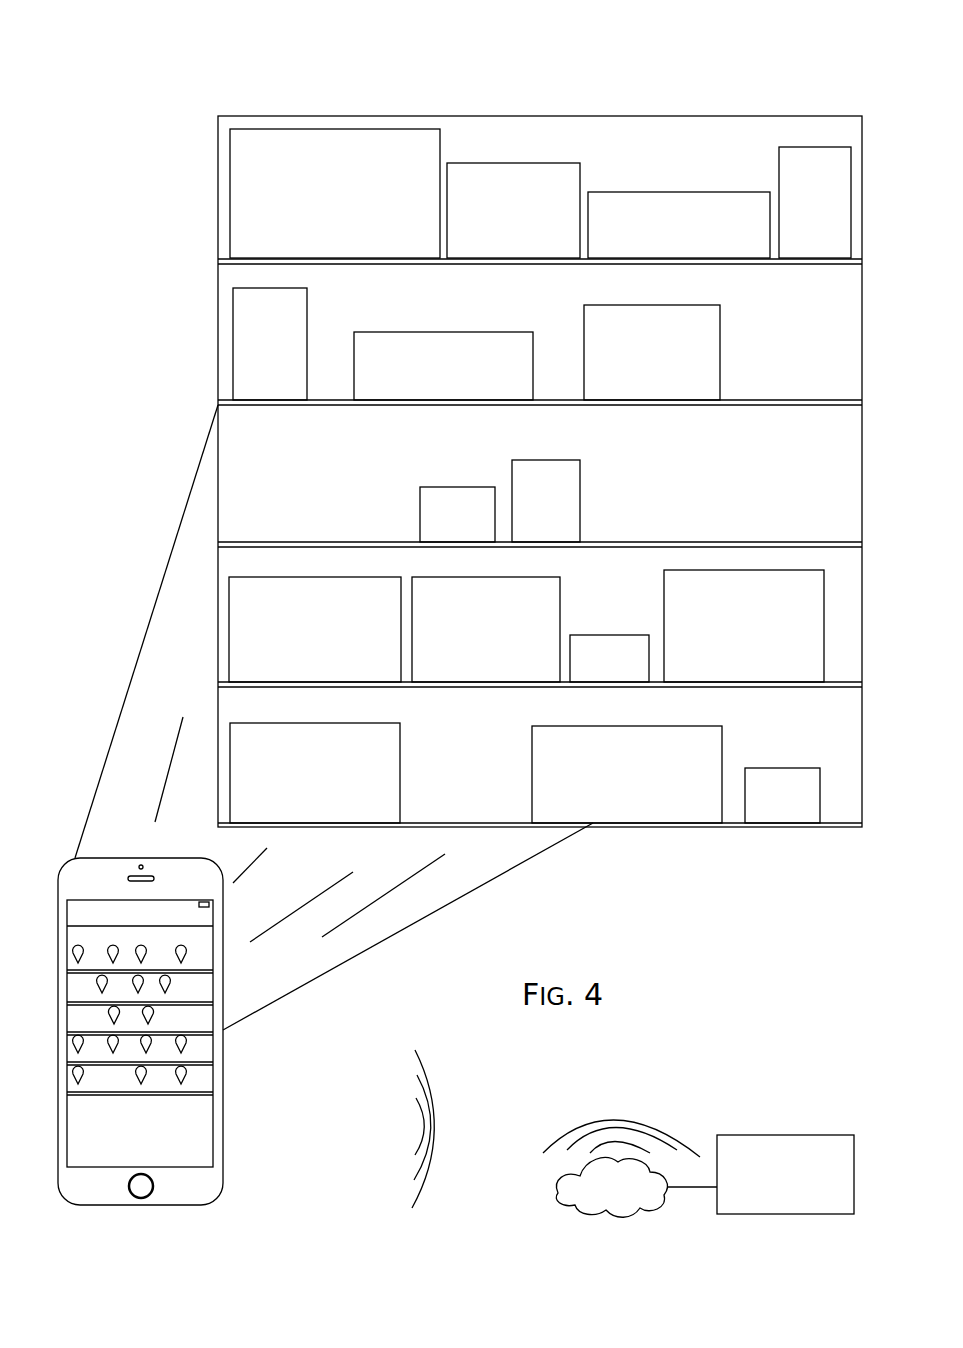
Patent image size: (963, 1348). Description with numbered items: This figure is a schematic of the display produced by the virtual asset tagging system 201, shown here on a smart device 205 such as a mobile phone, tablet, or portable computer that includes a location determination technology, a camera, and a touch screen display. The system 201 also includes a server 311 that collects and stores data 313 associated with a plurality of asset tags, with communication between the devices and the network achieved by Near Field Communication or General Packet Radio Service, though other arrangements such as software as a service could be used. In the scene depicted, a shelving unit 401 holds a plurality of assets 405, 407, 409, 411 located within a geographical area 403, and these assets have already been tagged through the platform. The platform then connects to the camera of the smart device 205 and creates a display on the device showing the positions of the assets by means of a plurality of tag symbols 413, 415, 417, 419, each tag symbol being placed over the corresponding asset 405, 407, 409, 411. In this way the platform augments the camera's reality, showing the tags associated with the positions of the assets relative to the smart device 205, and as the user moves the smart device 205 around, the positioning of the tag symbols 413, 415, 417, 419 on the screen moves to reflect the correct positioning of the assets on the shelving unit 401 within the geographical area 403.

The system 201 is at (872, 79).
The smart device 205 is at (195, 959).
The server 311 is at (558, 1193).
The data 313 is at (785, 1135).
The shelving unit 401 is at (180, 355).
The geographical area 403 is at (745, 827).
The asset 405 is at (230, 192).
The asset 407 is at (510, 163).
The asset 409 is at (680, 192).
The asset 411 is at (815, 147).
The tag symbol 413 is at (78, 950).
The tag symbol 415 is at (113, 950).
The tag symbol 417 is at (141, 950).
The tag symbol 419 is at (181, 950).